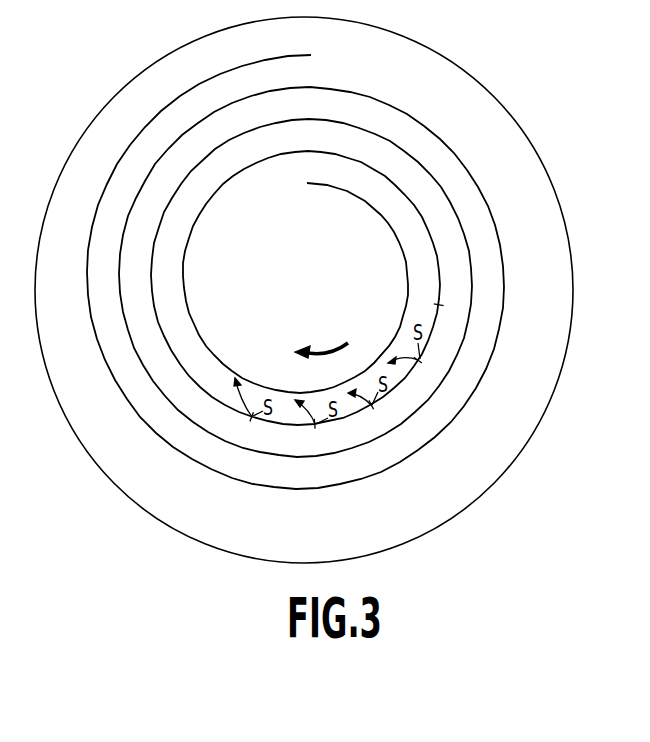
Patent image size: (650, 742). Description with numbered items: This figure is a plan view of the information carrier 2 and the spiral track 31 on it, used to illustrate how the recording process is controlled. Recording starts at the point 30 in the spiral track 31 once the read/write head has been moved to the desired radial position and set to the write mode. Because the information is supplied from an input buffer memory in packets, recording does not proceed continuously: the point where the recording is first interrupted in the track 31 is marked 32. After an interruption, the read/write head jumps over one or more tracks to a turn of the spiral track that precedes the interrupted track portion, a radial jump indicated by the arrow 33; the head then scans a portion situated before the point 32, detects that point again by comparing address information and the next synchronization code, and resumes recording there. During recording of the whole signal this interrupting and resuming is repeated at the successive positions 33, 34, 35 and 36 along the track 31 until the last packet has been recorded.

The information carrier 2 is at (557, 188).
The spiral track 31 is at (487, 202).
The recording start point 30 is at (439, 305).
The recording interruption point 32 is at (420, 361).
The arrow indicating radial jump 33 is at (397, 357).
The recording interruption position 34 is at (372, 406).
The recording interruption position 35 is at (315, 425).
The recording interruption position 36 is at (252, 418).